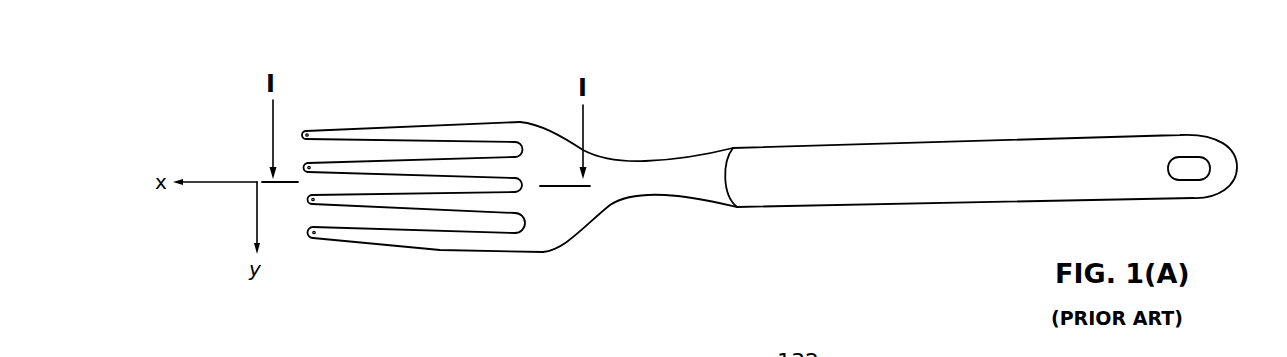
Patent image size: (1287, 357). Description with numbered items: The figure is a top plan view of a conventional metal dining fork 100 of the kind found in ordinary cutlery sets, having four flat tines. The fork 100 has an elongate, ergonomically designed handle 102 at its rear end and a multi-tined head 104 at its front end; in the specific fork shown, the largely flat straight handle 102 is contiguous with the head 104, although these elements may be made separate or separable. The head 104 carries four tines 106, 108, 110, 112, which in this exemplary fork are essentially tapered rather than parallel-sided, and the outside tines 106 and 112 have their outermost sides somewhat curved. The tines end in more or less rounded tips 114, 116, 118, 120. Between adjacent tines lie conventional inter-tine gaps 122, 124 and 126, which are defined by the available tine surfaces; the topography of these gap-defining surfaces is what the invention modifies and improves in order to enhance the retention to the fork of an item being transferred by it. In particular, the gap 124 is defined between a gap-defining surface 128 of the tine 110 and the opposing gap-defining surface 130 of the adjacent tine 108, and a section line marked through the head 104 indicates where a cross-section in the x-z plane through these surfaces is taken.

The dining fork 100 is at (896, 121).
The handle 102 is at (853, 195).
The head 104 is at (558, 220).
The tine 106 is at (393, 133).
The tine 108 is at (447, 168).
The tine 110 is at (362, 202).
The tine 112 is at (455, 247).
The tip 114 is at (305, 132).
The tip 116 is at (323, 150).
The tip 118 is at (312, 199).
The tip 120 is at (313, 232).
The inter-tine gap 122 is at (304, 167).
The inter-tine gap 124 is at (320, 183).
The inter-tine gap 126 is at (408, 222).
The gap-defining surface 128 is at (357, 200).
The gap-defining surface 130 is at (442, 172).